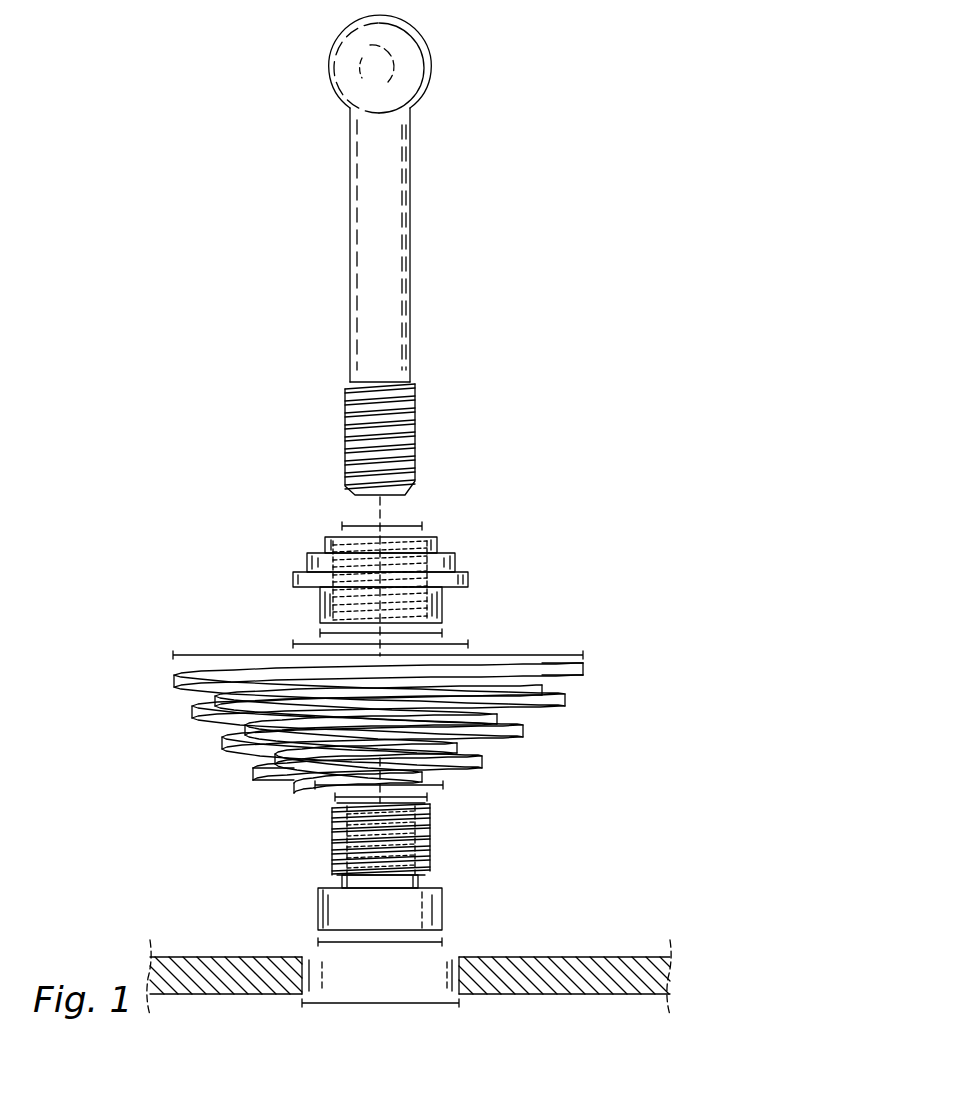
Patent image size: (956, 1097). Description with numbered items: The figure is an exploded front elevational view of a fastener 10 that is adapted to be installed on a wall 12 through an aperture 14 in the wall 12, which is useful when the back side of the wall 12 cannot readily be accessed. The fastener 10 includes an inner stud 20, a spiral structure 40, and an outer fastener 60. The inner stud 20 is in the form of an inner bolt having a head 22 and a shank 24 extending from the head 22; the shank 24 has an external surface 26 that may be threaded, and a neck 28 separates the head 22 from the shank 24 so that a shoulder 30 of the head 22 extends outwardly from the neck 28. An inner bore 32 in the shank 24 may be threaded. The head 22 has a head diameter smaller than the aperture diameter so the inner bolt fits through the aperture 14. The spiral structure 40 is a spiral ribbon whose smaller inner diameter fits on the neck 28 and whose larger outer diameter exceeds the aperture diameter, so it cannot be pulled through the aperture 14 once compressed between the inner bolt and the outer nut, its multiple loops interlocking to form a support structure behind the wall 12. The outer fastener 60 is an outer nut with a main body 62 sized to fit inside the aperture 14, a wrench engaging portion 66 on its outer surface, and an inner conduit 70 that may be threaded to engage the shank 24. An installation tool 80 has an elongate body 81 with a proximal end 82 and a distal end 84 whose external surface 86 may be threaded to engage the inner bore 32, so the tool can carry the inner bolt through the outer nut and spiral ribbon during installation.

The fastener 10 is at (145, 617).
The wall 12 is at (600, 957).
The aperture 14 is at (452, 957).
The inner stud 20 is at (470, 864).
The head 22 is at (442, 905).
The shank 24 is at (432, 847).
The external surface 26 is at (396, 858).
The neck 28 is at (418, 882).
The shoulder 30 is at (328, 893).
The inner bore 32 is at (432, 813).
The spiral structure 40 is at (637, 681).
The outer fastener 60 is at (544, 548).
The main body 62 is at (442, 605).
The wrench engaging portion 66 is at (437, 546).
The inner conduit 70 is at (347, 540).
The installation tool 80 is at (528, 223).
The elongate body 81 is at (410, 184).
The proximal end 82 is at (432, 55).
The distal end 84 is at (415, 452).
The external surface 86 is at (396, 448).